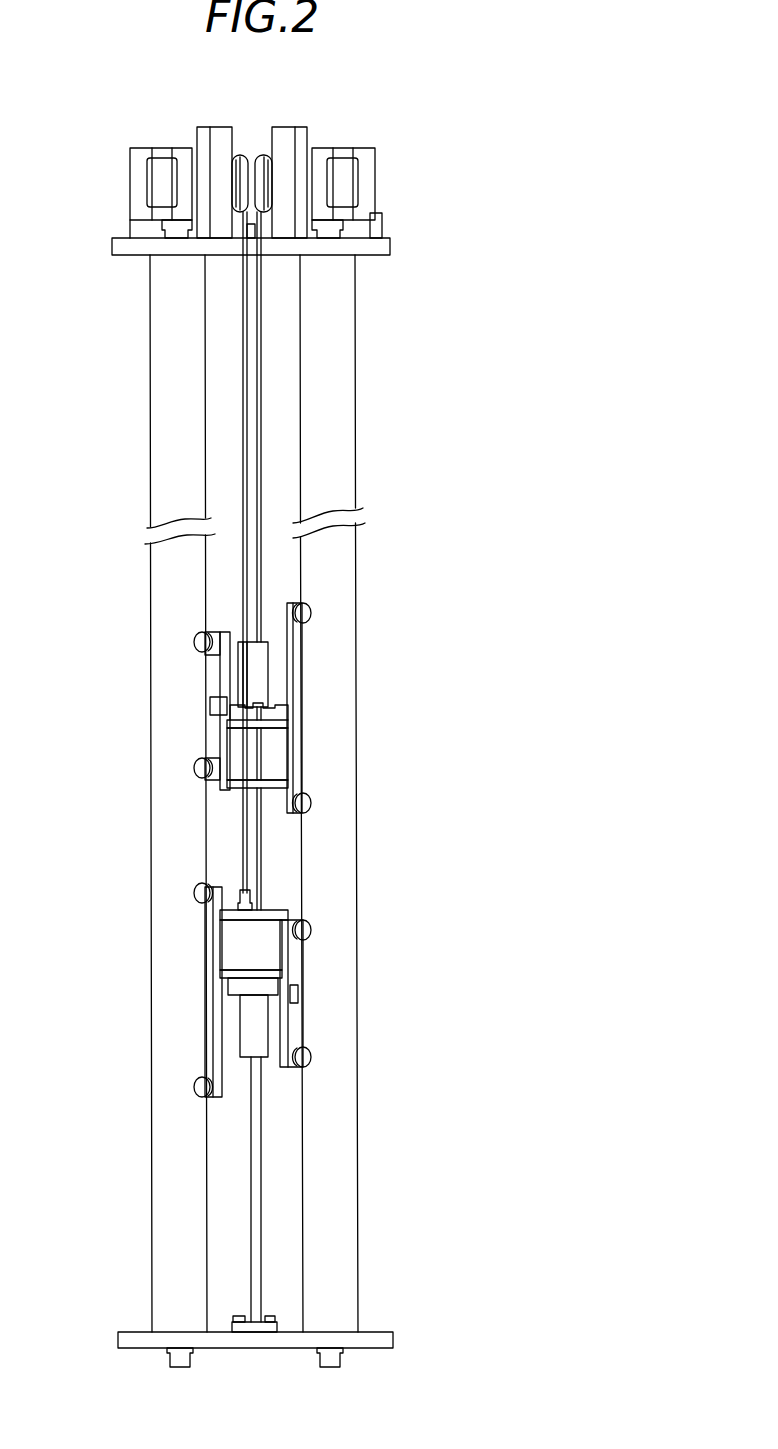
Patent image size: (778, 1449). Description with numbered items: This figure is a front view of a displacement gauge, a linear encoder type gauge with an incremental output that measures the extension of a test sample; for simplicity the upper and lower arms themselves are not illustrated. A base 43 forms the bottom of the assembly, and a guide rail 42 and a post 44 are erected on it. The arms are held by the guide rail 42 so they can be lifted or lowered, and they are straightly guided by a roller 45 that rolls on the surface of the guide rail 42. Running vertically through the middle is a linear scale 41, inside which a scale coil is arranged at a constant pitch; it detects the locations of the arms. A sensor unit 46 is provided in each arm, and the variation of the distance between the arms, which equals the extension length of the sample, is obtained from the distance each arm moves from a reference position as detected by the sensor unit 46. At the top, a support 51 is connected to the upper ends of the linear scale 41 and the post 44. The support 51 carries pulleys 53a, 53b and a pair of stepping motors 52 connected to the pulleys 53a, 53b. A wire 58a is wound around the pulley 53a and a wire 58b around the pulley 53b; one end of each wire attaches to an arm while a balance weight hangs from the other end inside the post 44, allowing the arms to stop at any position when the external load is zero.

The linear scale 41 is at (255, 1172).
The guide rail 42 is at (330, 318).
The base 43 is at (388, 1343).
The post 44 is at (220, 292).
The roller 45 is at (312, 610).
The sensor unit 46 is at (240, 678).
The support 51 is at (380, 245).
The stepping motor 52 is at (155, 184).
The pulley 53a is at (258, 153).
The pulley 53b is at (243, 153).
The wire 58a is at (262, 448).
The wire 58b is at (243, 468).